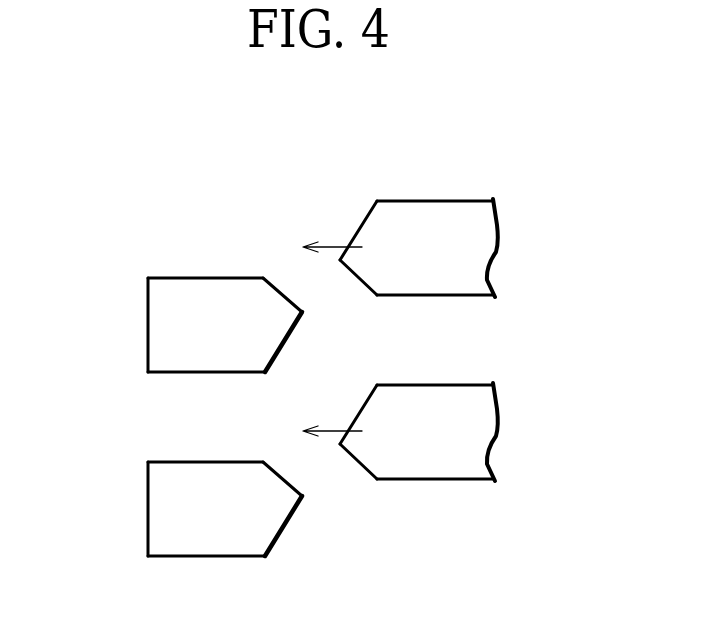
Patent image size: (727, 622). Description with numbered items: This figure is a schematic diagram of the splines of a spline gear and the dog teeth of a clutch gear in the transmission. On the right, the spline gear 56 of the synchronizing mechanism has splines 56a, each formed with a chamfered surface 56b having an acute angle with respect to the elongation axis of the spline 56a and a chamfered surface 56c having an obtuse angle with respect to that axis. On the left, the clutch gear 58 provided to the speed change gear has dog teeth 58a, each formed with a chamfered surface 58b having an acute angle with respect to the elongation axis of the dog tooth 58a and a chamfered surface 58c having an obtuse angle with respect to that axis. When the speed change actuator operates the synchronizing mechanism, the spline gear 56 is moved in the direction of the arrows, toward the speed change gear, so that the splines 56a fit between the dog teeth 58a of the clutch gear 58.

The spline gear 56 is at (462, 171).
The spline 56a is at (470, 240).
The chamfered surface 56b is at (356, 278).
The chamfered surface 56c is at (368, 216).
The clutch gear 58 is at (181, 246).
The dog tooth 58a is at (160, 318).
The chamfered surface 58b is at (280, 292).
The chamfered surface 58c is at (290, 338).